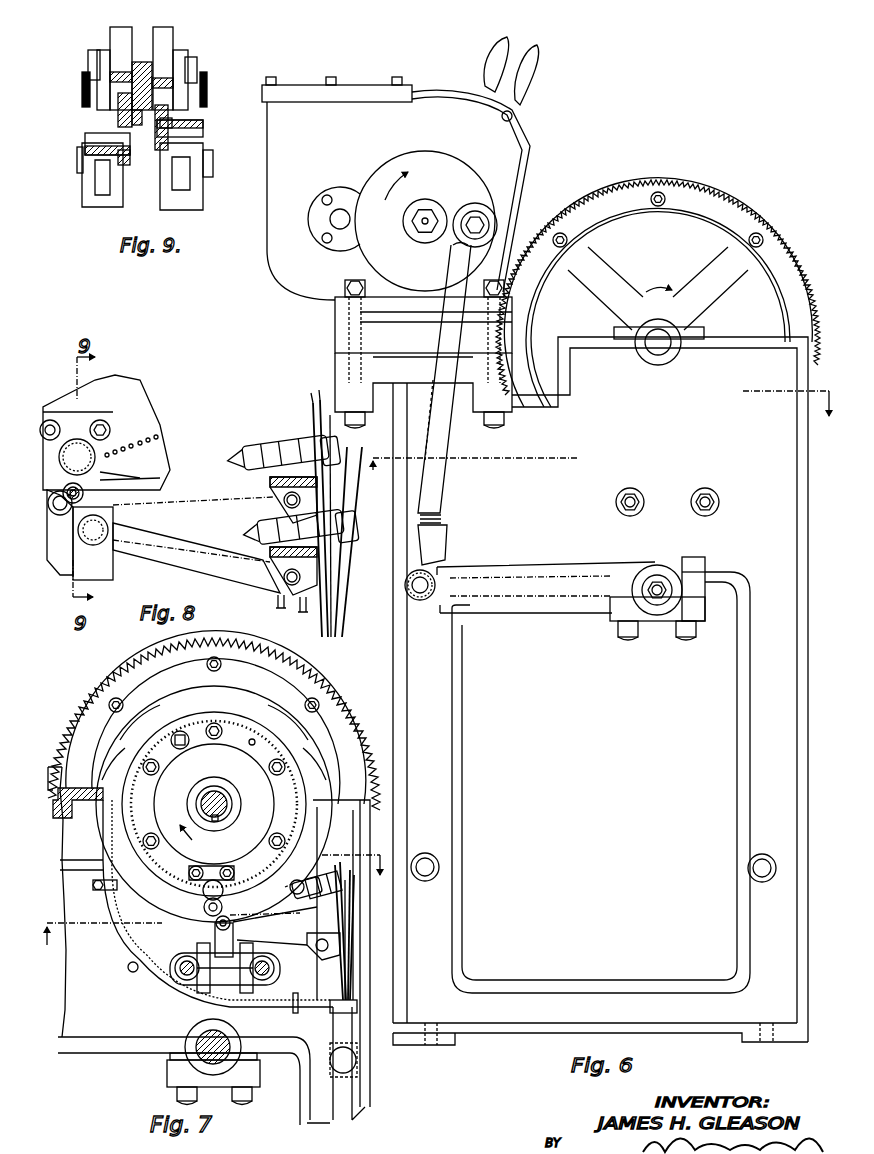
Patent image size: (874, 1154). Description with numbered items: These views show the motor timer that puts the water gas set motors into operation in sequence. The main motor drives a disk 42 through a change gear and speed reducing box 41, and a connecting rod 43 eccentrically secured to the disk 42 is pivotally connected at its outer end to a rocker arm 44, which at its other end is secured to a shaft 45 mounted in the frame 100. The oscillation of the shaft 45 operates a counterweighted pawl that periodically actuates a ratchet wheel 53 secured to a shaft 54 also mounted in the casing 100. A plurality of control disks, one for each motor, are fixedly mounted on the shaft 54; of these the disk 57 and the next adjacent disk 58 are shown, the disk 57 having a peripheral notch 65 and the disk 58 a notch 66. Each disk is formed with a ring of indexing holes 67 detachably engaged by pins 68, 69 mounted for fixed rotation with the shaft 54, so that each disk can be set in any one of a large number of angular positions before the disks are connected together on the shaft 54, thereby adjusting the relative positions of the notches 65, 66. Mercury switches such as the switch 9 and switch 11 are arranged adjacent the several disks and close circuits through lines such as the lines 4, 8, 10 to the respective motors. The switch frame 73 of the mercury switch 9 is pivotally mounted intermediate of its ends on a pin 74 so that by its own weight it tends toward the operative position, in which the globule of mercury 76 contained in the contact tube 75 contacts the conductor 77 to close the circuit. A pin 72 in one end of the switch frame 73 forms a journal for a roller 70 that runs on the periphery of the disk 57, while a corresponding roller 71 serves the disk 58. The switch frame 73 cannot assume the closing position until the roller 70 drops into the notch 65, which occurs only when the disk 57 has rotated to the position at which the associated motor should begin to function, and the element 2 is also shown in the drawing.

In FIG. 8, the needle bar 2 is at (322, 617).
In FIG. 7, the needle bar 2 is at (340, 985).
In FIG. 7, the line 4 is at (211, 914).
In FIG. 6, the line 4 is at (599, 441).
In FIG. 8, the line 8 is at (345, 601).
In FIG. 7, the line 8 is at (353, 978).
In FIG. 9, the mercury switch 9 is at (172, 121).
In FIG. 8, the mercury switch 9 is at (270, 552).
In FIG. 7, the mercury switch 9 is at (342, 937).
In FIG. 8, the line 10 is at (340, 578).
In FIG. 7, the line 10 is at (350, 957).
In FIG. 9, the switch 11 is at (94, 142).
In FIG. 8, the switch 11 is at (276, 499).
In FIG. 7, the switch 11 is at (330, 879).
In FIG. 6, the change gear and speed reducing box 41 is at (430, 101).
In FIG. 6, the disk 42 is at (399, 154).
In FIG. 6, the connecting rod 43 is at (452, 472).
In FIG. 6, the rocker arm 44 is at (530, 565).
In FIG. 7, the shaft 45 is at (200, 1040).
In FIG. 6, the shaft 45 is at (660, 578).
In FIG. 7, the ratchet wheel 53 is at (312, 690).
In FIG. 6, the ratchet wheel 53 is at (716, 188).
In FIG. 7, the shaft 54 is at (225, 804).
In FIG. 6, the shaft 54 is at (665, 357).
In FIG. 9, the disk 57 is at (168, 37).
In FIG. 8, the disk 57 is at (165, 456).
In FIG. 7, the disk 57 is at (237, 702).
In FIG. 9, the disk 58 is at (120, 33).
In FIG. 8, the disk 58 is at (145, 490).
In FIG. 9, the peripheral notch 65 is at (150, 112).
In FIG. 8, the peripheral notch 65 is at (142, 479).
In FIG. 7, the peripheral notch 65 is at (290, 886).
In FIG. 7, the peripheral notch 66 is at (296, 843).
In FIG. 9, the indexing holes 67 is at (142, 60).
In FIG. 8, the indexing holes 67 is at (160, 433).
In FIG. 7, the indexing holes 67 is at (189, 874).
In FIG. 9, the pin 68 is at (207, 86).
In FIG. 8, the pin 68 is at (80, 440).
In FIG. 7, the pin 68 is at (203, 891).
In FIG. 9, the pin 69 is at (82, 84).
In FIG. 9, the roller 70 is at (155, 140).
In FIG. 8, the roller 70 is at (85, 490).
In FIG. 7, the roller 70 is at (204, 908).
In FIG. 9, the roller 71 is at (124, 165).
In FIG. 8, the roller 71 is at (58, 518).
In FIG. 7, the roller 71 is at (208, 915).
In FIG. 9, the pin 72 is at (203, 130).
In FIG. 8, the pin 72 is at (84, 488).
In FIG. 7, the pin 72 is at (215, 928).
In FIG. 9, the switch frame 73 is at (100, 170).
In FIG. 8, the switch frame 73 is at (228, 570).
In FIG. 7, the switch frame 73 is at (300, 950).
In FIG. 9, the pin 74 is at (78, 160).
In FIG. 8, the pin 74 is at (75, 565).
In FIG. 8, the contact tube 75 is at (278, 437).
In FIG. 7, the contact tube 75 is at (312, 880).
In FIG. 8, the globule of mercury 76 is at (248, 445).
In FIG. 7, the globule of mercury 76 is at (297, 880).
In FIG. 8, the conductor 77 is at (330, 507).
In FIG. 7, the conductor 77 is at (345, 910).
In FIG. 7, the frame 100 is at (93, 1040).
In FIG. 6, the frame 100 is at (725, 585).